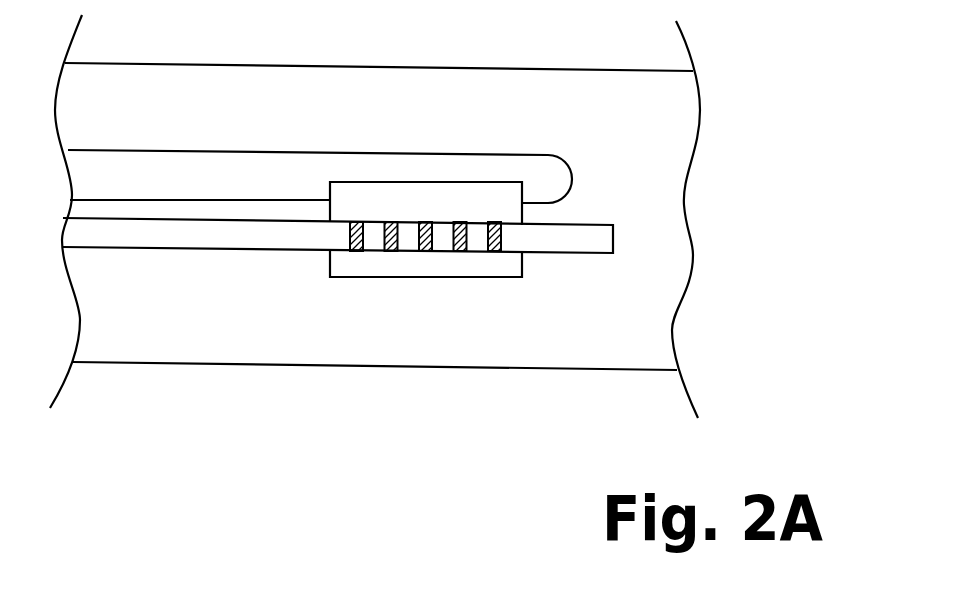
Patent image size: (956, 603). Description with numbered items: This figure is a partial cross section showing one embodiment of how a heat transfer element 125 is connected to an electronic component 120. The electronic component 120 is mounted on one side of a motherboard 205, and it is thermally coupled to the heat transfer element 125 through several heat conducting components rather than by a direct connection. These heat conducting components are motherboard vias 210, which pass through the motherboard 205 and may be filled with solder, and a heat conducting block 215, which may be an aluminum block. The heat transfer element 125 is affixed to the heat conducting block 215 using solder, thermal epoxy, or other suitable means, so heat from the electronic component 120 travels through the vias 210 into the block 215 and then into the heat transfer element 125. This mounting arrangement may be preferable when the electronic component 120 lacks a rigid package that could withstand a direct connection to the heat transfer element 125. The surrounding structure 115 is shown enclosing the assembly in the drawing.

The catheter body wall 115 is at (402, 395).
The heat transfer element 125 is at (182, 191).
The heat conducting block 215 is at (500, 216).
The electronic component 120 is at (473, 279).
The motherboard 205 is at (613, 240).
The motherboard vias 210 is at (500, 240).